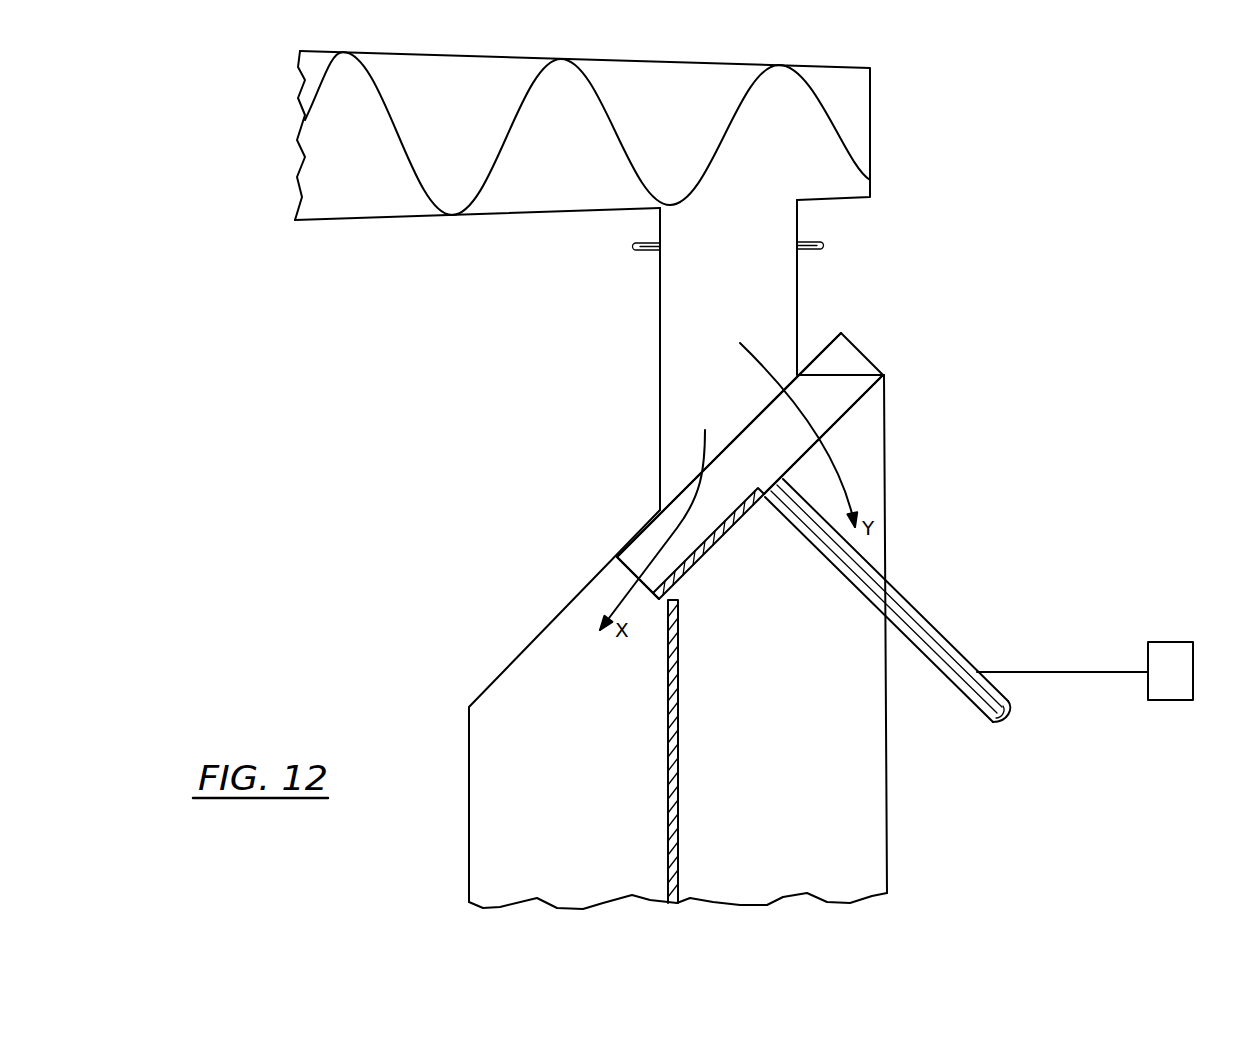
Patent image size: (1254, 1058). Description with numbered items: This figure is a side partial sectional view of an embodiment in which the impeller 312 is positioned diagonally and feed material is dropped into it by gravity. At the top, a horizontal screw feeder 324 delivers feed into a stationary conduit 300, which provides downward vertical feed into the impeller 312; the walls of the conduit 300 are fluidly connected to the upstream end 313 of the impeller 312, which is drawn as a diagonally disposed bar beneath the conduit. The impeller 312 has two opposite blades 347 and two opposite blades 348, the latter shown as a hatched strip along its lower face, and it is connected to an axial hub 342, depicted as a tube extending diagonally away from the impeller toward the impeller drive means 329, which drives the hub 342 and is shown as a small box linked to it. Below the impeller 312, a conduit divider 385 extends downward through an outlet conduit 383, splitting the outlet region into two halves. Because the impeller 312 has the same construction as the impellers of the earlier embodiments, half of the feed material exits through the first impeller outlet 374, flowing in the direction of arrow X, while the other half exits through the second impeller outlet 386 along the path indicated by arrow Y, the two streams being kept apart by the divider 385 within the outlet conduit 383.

The stationary conduit 300 is at (800, 285).
The impeller 312 is at (858, 352).
The upstream end of the impeller 313 is at (748, 423).
The horizontal screw feeder 324 is at (373, 220).
The impeller drive means 329 is at (1170, 642).
The axial hub 342 is at (923, 617).
The blades 347 is at (842, 392).
The blades 348 is at (703, 527).
The first impeller outlet 374 is at (624, 562).
The outlet conduit 383 is at (887, 815).
The conduit divider 385 is at (678, 787).
The second impeller outlet 386 is at (850, 417).